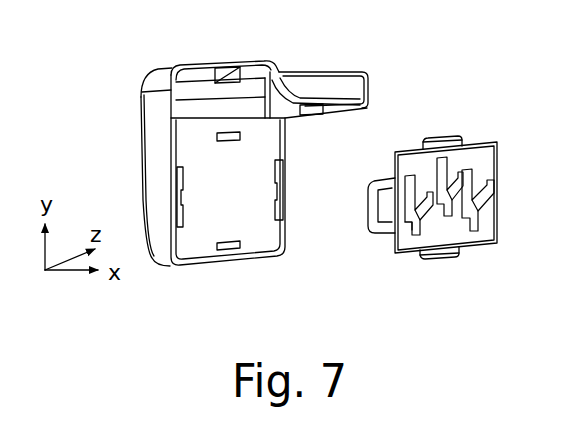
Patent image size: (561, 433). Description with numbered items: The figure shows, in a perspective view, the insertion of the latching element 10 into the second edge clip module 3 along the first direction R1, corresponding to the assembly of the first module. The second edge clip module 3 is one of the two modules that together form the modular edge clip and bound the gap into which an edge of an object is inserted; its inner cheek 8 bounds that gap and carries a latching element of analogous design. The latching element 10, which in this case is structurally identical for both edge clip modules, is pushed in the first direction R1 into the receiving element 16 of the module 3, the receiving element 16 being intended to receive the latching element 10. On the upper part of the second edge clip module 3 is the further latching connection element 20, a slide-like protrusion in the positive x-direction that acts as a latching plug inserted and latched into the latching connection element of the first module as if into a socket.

The second edge clip module 3 is at (157, 71).
The further latching connection element 20 is at (346, 69).
The receiving element 16 is at (244, 157).
The cheek 8 is at (263, 258).
The first direction R1 is at (345, 202).
The latching element 10 is at (473, 157).